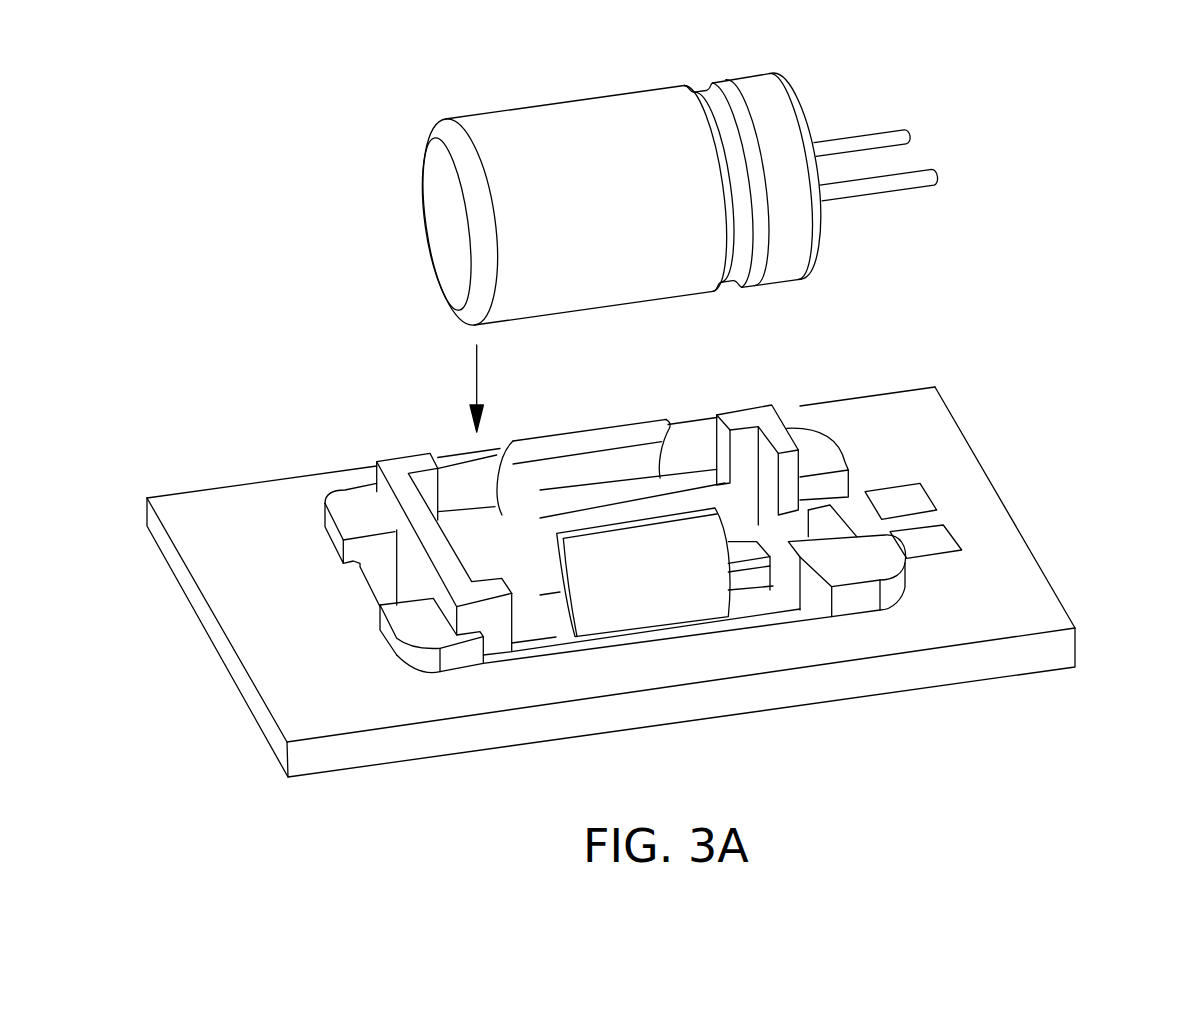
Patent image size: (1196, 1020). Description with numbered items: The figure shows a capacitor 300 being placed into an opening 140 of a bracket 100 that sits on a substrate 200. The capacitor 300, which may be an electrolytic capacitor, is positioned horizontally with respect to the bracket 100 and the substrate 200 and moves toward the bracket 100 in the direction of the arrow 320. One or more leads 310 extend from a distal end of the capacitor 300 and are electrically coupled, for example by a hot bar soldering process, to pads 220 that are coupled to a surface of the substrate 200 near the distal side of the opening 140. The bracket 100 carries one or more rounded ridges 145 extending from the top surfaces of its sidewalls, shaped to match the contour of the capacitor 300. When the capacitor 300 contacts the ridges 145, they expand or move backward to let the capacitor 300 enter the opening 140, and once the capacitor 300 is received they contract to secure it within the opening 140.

The bracket 100 is at (322, 513).
The opening 140 is at (694, 490).
The ridge 145 is at (557, 433).
The substrate 200 is at (1080, 647).
The pad 220 is at (957, 542).
The capacitor 300 is at (433, 260).
The lead 310 is at (852, 130).
The arrow 320 is at (477, 380).